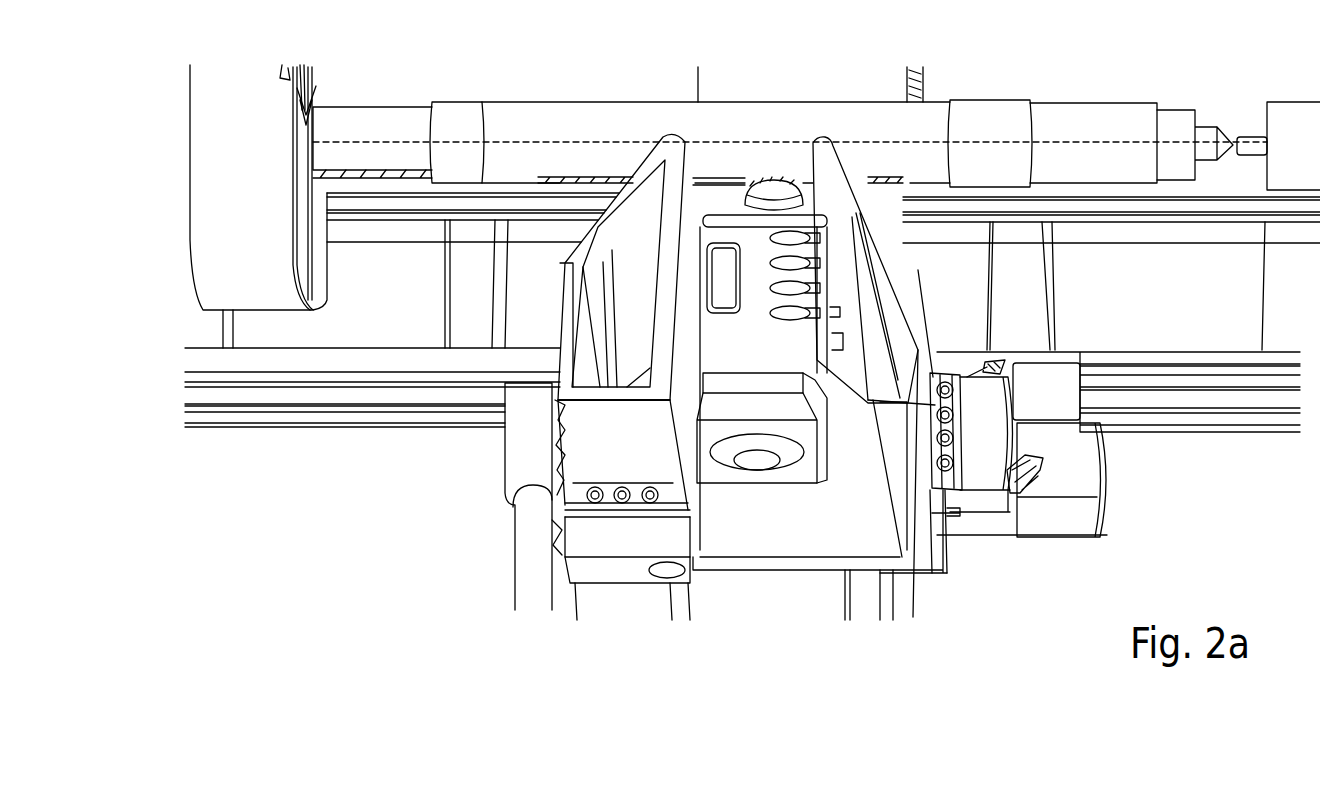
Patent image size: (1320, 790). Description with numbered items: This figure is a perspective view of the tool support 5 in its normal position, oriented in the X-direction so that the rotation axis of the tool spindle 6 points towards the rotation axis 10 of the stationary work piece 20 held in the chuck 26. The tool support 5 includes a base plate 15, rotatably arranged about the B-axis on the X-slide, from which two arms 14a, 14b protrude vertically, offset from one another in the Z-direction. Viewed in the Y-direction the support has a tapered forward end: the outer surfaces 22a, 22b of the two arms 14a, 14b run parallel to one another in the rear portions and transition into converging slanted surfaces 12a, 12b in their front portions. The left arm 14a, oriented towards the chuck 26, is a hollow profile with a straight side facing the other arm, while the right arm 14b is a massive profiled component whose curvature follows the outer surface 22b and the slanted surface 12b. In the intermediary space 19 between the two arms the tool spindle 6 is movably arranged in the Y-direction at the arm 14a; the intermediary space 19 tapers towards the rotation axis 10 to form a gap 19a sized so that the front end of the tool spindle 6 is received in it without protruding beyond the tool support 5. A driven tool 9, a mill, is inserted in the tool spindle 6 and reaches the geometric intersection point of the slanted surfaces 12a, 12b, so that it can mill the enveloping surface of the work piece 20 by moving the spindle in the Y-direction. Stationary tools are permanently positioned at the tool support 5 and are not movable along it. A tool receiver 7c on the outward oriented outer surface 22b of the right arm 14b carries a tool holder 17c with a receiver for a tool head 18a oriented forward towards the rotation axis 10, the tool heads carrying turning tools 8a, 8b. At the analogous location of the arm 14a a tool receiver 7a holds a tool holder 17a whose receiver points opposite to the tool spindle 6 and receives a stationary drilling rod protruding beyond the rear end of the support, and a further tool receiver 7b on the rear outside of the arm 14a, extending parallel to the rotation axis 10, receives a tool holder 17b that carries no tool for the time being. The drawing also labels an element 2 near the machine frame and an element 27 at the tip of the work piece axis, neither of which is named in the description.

The chuck 26 is at (258, 206).
The slanted surface 12a is at (633, 173).
The gap 19a is at (700, 173).
The driven tool 9 is at (768, 203).
The slanted surface 12b is at (868, 180).
The rotation axis 10 is at (1108, 142).
The pin 27 is at (1278, 146).
The work piece 20 is at (823, 241).
The arm 14a is at (621, 267).
The arm 14b is at (895, 308).
The frame 2 is at (1118, 357).
The tool spindle 6 is at (771, 382).
The tool receiver 7c is at (935, 393).
The stationary tool 8b is at (990, 367).
The outer surface 22a is at (558, 352).
The tool holder 17a is at (513, 443).
The tool receiver 7a is at (558, 438).
The tool receiver 7b is at (637, 493).
The intermediary space 19 is at (799, 465).
The stationary tool 8a is at (1028, 472).
The tool head 18a is at (1017, 490).
The tool holder 17b is at (592, 572).
The tool support 5 is at (773, 648).
The base plate 15 is at (780, 565).
The outer surface 22b is at (913, 600).
The tool holder 17c is at (975, 480).